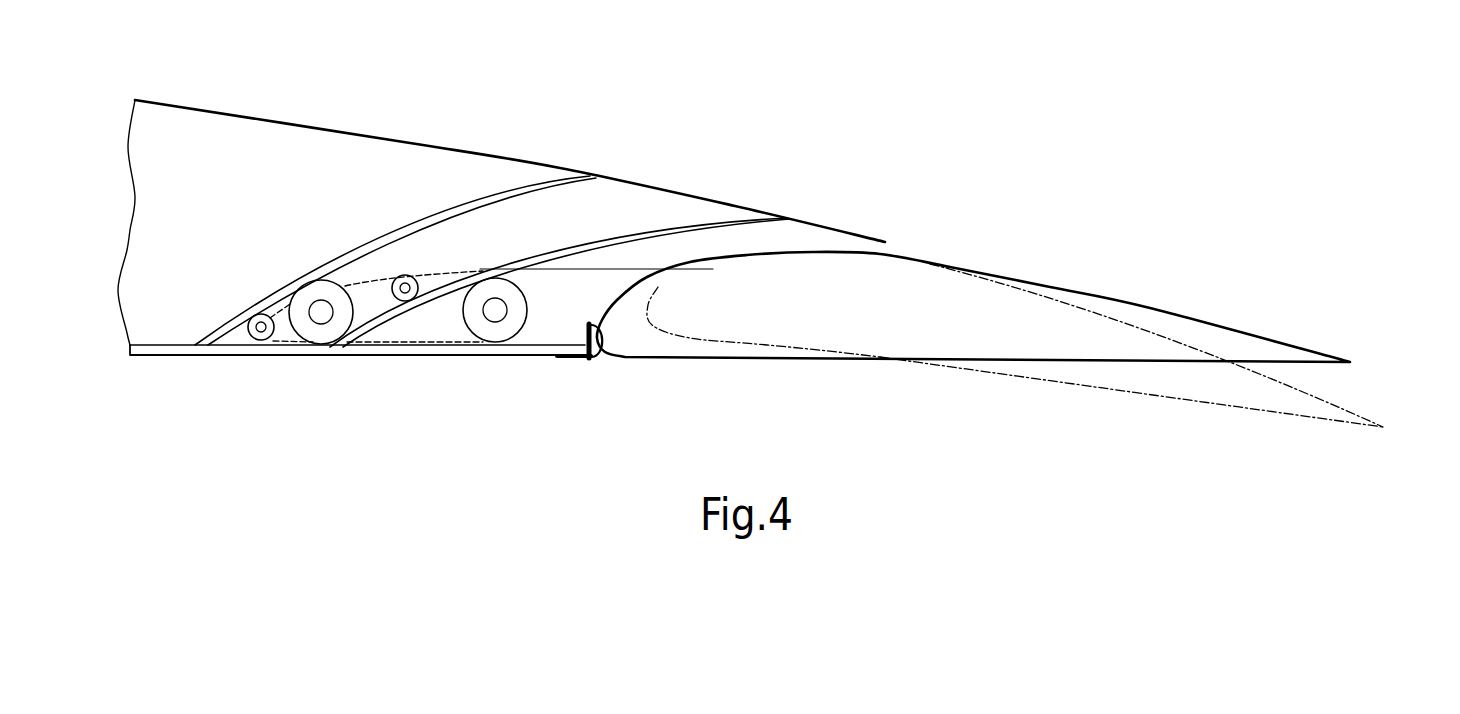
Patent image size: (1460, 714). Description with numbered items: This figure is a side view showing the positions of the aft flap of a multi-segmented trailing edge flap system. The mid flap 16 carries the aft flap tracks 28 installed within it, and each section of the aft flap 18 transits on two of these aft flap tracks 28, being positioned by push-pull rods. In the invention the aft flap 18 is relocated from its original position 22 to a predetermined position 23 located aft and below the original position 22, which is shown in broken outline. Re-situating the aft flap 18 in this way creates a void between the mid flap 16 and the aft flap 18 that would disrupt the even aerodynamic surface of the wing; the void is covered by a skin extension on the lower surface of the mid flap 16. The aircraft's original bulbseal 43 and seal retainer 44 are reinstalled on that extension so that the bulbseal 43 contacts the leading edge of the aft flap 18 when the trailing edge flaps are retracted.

The mid flap 16 is at (223, 127).
The aft flap tracks 28 is at (521, 230).
The original positions 22 is at (1248, 330).
The predetermined position 23 is at (1362, 415).
The seal retainer 44 is at (573, 360).
The bulbseal 43 is at (599, 360).
The aft flap 18 is at (638, 343).